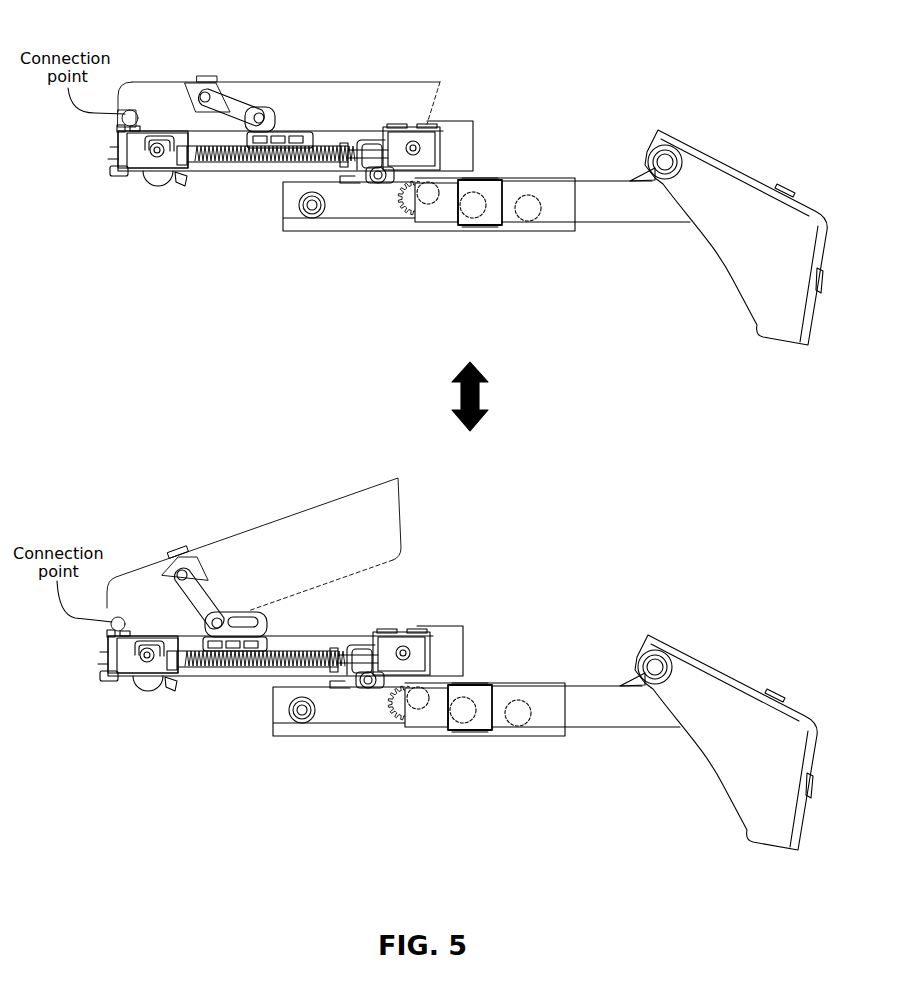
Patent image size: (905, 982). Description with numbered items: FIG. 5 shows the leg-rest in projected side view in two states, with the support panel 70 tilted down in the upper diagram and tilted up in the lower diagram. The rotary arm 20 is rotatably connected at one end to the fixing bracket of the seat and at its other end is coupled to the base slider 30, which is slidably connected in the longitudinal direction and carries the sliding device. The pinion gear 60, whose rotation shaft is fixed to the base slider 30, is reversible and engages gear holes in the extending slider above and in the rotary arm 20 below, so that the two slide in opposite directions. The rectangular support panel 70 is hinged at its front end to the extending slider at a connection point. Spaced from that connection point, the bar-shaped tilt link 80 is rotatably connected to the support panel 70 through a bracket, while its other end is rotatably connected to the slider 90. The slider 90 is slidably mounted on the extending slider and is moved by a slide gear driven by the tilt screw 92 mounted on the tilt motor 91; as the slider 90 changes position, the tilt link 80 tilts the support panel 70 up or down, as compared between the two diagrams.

The rotary arm 20 is at (593, 218).
The base slider 30 is at (348, 218).
The pinion gear 60 is at (403, 208).
The support panel 70 is at (157, 82).
The tilt link 80 is at (236, 104).
The slider 90 is at (272, 132).
The tilt motor 91 is at (160, 180).
The tilt screw 92 is at (215, 142).